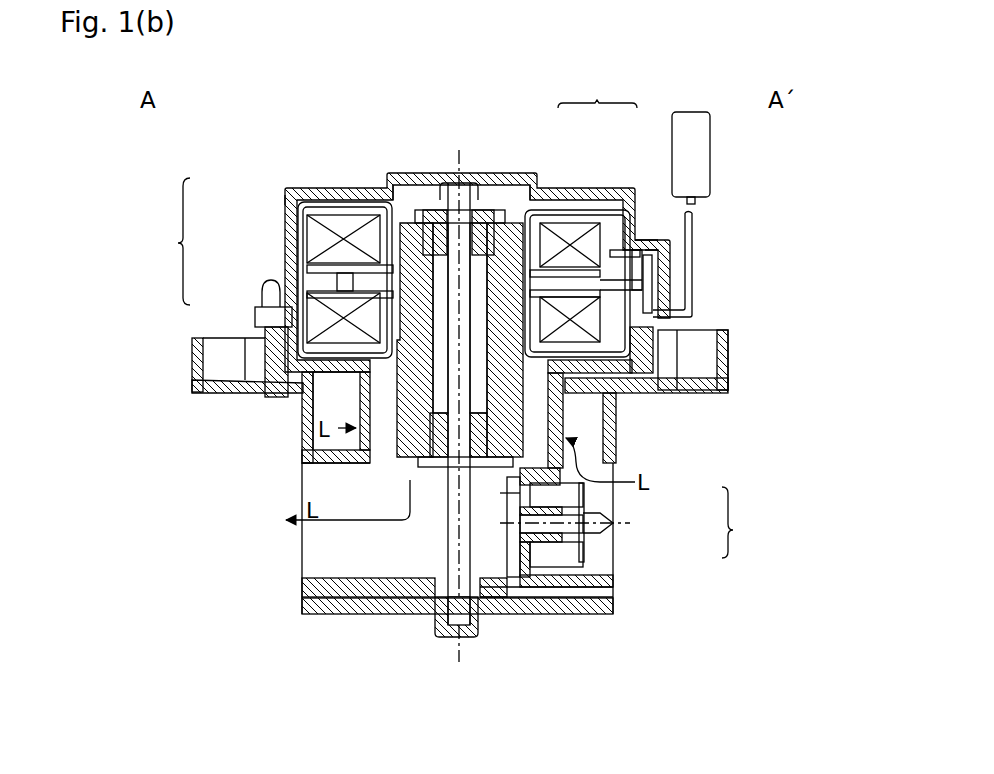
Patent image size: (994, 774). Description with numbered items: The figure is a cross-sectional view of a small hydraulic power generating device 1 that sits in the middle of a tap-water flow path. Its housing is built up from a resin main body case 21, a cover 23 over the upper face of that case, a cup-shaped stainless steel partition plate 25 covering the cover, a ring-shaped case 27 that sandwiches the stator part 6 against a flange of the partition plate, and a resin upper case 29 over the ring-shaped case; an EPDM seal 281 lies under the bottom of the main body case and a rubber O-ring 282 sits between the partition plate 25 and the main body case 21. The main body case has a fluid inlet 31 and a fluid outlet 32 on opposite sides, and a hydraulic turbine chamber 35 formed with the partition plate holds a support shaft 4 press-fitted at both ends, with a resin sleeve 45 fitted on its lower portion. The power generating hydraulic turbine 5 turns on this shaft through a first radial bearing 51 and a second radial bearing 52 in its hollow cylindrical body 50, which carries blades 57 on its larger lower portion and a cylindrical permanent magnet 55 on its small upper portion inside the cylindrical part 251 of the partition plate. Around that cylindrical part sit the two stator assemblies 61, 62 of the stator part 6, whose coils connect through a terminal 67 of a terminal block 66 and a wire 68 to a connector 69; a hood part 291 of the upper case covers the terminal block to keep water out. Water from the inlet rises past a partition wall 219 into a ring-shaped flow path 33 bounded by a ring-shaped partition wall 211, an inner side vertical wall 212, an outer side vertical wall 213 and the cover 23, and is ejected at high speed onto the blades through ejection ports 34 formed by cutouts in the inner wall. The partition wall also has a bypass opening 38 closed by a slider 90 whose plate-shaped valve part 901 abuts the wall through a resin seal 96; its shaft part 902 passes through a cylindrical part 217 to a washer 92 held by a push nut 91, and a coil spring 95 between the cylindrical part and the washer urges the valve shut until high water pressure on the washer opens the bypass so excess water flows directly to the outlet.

The hydraulic power generating device 1 is at (288, 182).
The ring-shaped case 27 is at (345, 205).
The upper case 29 is at (382, 192).
The hood part 291 is at (648, 242).
The cylindrical part 251 is at (412, 218).
The partition plate 25 is at (612, 376).
The sleeve 45 is at (442, 545).
The support shaft 4 is at (457, 556).
The power generating hydraulic turbine 5 is at (177, 241).
The second cylindrical radial bearing 52 is at (427, 248).
The permanent magnet 55 is at (410, 270).
The hollow cylindrical body 50 is at (410, 357).
The first cylindrical radial bearing 51 is at (380, 423).
The blades 57 is at (288, 385).
The stator part 6 is at (597, 91).
The stator assembly 62 is at (540, 233).
The stator assembly 61 is at (572, 292).
The connector 69 is at (708, 168).
The terminal block 66 is at (648, 270).
The terminal 67 is at (652, 288).
The wire 68 is at (692, 306).
The O-ring 282 is at (668, 340).
The cover 23 is at (603, 390).
The ring-shaped flow path 33 is at (586, 400).
The fluid inlet 31 is at (615, 468).
The cylindrical part 217 is at (548, 573).
The partition wall 219 is at (530, 478).
The seal 96 is at (528, 557).
The hydraulic turbine chamber 35 is at (512, 548).
The opening 38 is at (570, 545).
The valve part 901 is at (578, 526).
The shaft part 902 is at (568, 532).
The slider 90 is at (741, 522).
The push nut 91 is at (583, 553).
The washer 92 is at (585, 578).
The coil spring 95 is at (600, 588).
The seal 281 is at (597, 614).
The fluid outlet 32 is at (301, 565).
The main body case 21 is at (347, 470).
The ejection ports 34 is at (303, 412).
The ring-shaped partition wall 211 is at (322, 464).
The outer side vertical wall 213 is at (302, 450).
The inner side vertical wall 212 is at (300, 392).